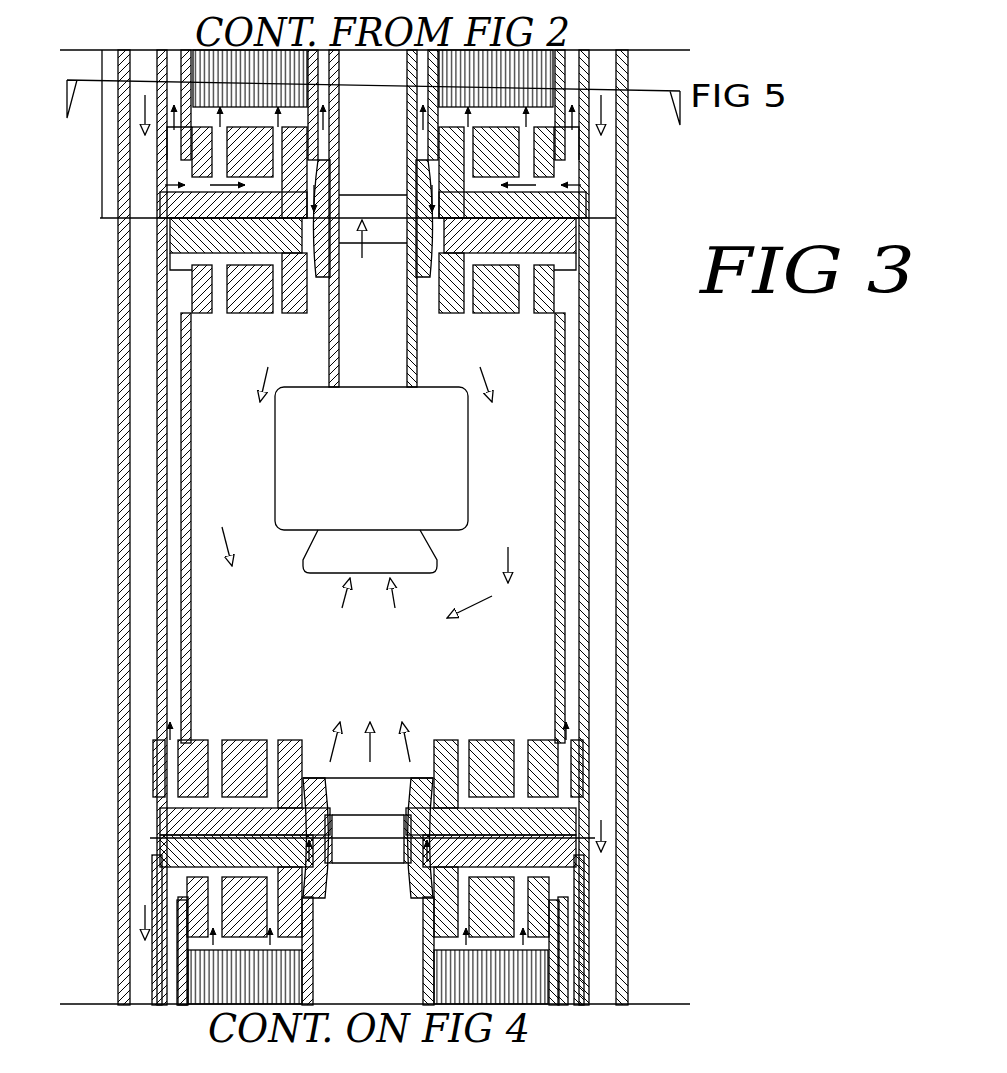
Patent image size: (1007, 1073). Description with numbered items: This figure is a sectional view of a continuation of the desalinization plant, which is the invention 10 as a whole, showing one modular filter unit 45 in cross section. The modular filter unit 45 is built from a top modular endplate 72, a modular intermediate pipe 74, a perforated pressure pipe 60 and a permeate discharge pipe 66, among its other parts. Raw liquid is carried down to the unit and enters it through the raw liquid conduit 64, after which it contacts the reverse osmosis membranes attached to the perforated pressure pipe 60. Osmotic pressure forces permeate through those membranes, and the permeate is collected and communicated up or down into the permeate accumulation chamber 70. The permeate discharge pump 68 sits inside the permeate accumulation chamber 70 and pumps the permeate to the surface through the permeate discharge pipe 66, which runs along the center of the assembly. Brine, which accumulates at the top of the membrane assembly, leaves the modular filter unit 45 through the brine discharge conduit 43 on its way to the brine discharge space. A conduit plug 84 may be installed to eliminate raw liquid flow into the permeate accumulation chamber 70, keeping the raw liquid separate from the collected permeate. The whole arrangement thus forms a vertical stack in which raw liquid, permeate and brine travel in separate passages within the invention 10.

The invention 10 is at (767, 484).
The brine discharge conduit 43 is at (578, 235).
The modular filter unit 45 is at (100, 224).
The perforated pressure pipe 60 is at (303, 127).
The raw liquid conduit 64 is at (588, 185).
The permeate discharge pipe 66 is at (417, 347).
The permeate discharge pump 68 is at (468, 452).
The permeate accumulation chamber 70 is at (515, 658).
The top modular endplate 72 is at (585, 890).
The modular intermediate pipe 74 is at (560, 967).
The conduit plug 84 is at (580, 808).